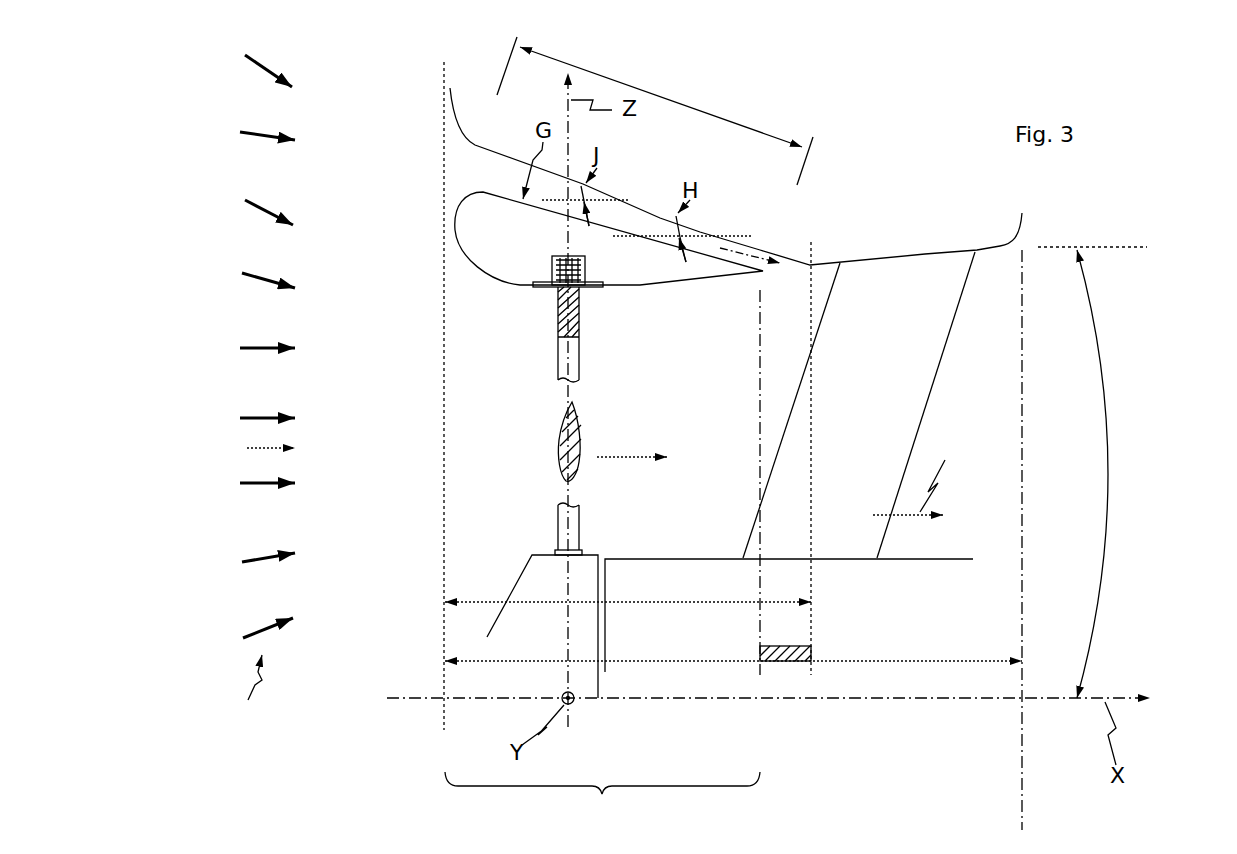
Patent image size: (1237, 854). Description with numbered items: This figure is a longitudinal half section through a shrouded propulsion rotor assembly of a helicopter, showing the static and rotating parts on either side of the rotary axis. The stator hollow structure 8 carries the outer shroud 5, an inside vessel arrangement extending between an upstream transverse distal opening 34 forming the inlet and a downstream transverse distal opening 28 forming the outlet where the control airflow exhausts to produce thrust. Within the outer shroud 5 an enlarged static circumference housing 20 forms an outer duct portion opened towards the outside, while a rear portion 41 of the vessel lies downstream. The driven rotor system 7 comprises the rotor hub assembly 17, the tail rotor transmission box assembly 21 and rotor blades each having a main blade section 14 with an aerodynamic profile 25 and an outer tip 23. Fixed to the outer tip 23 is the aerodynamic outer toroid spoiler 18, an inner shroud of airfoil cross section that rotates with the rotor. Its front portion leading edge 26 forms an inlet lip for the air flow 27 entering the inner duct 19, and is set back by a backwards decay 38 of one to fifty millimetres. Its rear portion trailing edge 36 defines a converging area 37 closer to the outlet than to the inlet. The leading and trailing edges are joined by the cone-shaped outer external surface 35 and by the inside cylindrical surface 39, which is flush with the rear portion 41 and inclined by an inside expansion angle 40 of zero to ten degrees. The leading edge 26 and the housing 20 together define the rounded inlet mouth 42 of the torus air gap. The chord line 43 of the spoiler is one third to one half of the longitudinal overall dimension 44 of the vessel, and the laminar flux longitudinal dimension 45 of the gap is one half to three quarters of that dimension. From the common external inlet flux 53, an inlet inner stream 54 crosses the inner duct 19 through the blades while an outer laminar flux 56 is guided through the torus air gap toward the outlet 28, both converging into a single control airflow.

The outer shroud 5 is at (389, 76).
The driven rotor system 7 is at (602, 796).
The stator hollow structure 8 is at (859, 370).
The main blade section 14 is at (488, 532).
The rotor hub assembly 17 is at (484, 626).
The aerodynamic outer toroid spoiler 18 is at (609, 272).
The inner duct 19 is at (497, 384).
The static circumference housing 20 is at (690, 176).
The tail rotor transmission box assembly 21 is at (886, 604).
The outer tip 23 is at (499, 319).
The aerodynamic profile 25 is at (488, 441).
The front portion leading edge 26 is at (409, 281).
The air flow 27 is at (246, 696).
The downstream transverse distal opening 28 is at (1096, 422).
The upstream transverse distal opening 34 is at (398, 396).
The outer external surface 35 is at (525, 241).
The rear portion trailing edge 36 is at (743, 310).
The converging area 37 is at (785, 693).
The backwards decay 38 is at (470, 218).
The inside cylindrical surface 39 is at (621, 323).
The inside expansion angle 40 is at (1151, 474).
The rear portion 41 is at (935, 197).
The inlet mouth 42 is at (420, 165).
The chord line 43 is at (655, 111).
The longitudinal overall dimension 44 is at (733, 722).
The laminar flux longitudinal dimension 45 is at (628, 560).
The common external inlet flux 53 is at (242, 460).
The inlet inner stream 54 is at (640, 416).
The outer laminar flux 56 is at (760, 228).